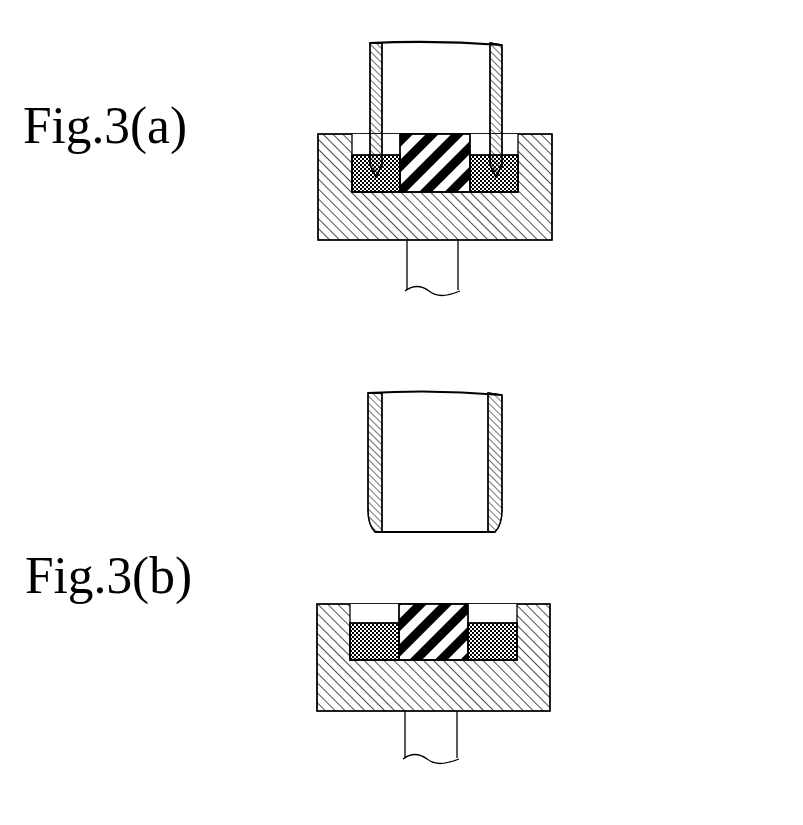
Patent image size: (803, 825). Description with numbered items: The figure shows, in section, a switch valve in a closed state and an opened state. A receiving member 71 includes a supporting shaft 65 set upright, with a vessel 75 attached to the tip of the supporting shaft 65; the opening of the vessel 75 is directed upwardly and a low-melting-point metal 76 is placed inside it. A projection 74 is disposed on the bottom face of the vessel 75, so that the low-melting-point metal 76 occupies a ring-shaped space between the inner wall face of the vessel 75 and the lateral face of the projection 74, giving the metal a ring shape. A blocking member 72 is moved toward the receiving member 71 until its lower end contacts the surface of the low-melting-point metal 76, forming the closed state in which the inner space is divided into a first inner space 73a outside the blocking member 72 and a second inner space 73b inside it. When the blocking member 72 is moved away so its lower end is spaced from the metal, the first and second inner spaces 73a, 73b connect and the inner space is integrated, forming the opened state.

In FIG. 3A, the supporting shaft 65 is at (453, 262).
In FIG. 3B, the supporting shaft 65 is at (452, 732).
In FIG. 3A, the receiving member 71 is at (420, 183).
In FIG. 3B, the receiving member 71 is at (417, 654).
In FIG. 3A, the blocking member 72 is at (452, 89).
In FIG. 3B, the blocking member 72 is at (452, 445).
In FIG. 3A, the first inner space 73a is at (487, 89).
In FIG. 3B, the first inner space 73a is at (487, 479).
In FIG. 3A, the second inner space 73b is at (473, 46).
In FIG. 3B, the second inner space 73b is at (474, 404).
In FIG. 3A, the projection 74 is at (433, 137).
In FIG. 3B, the projection 74 is at (432, 604).
In FIG. 3A, the vessel 75 is at (552, 177).
In FIG. 3B, the vessel 75 is at (550, 645).
In FIG. 3A, the low-melting-point metal 76 is at (510, 157).
In FIG. 3B, the low-melting-point metal 76 is at (508, 622).